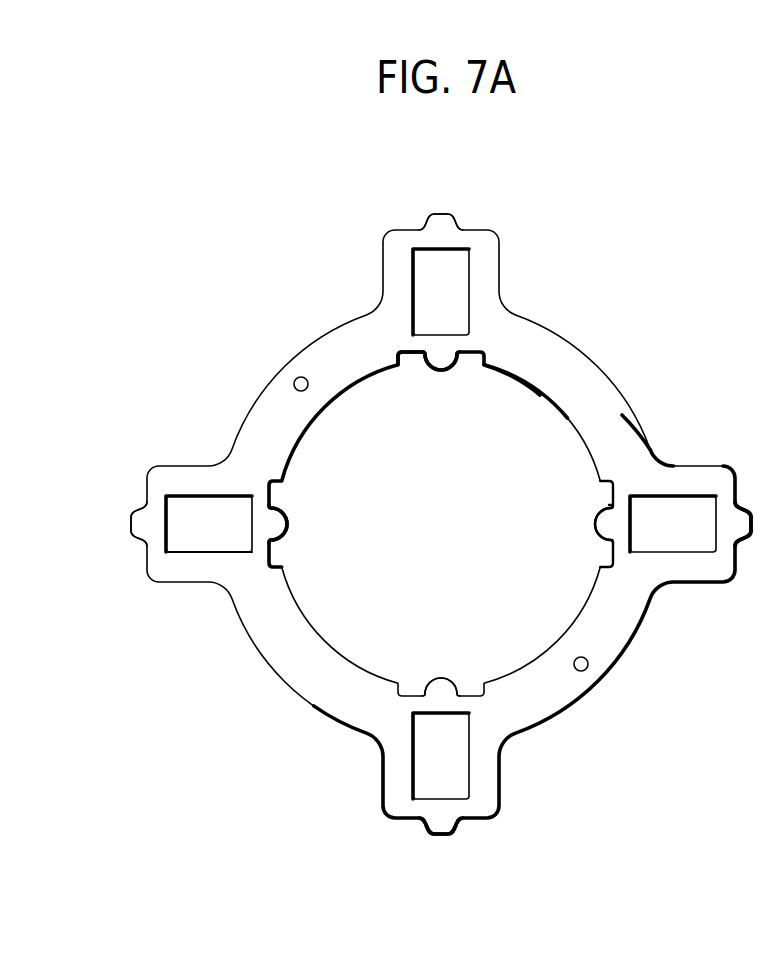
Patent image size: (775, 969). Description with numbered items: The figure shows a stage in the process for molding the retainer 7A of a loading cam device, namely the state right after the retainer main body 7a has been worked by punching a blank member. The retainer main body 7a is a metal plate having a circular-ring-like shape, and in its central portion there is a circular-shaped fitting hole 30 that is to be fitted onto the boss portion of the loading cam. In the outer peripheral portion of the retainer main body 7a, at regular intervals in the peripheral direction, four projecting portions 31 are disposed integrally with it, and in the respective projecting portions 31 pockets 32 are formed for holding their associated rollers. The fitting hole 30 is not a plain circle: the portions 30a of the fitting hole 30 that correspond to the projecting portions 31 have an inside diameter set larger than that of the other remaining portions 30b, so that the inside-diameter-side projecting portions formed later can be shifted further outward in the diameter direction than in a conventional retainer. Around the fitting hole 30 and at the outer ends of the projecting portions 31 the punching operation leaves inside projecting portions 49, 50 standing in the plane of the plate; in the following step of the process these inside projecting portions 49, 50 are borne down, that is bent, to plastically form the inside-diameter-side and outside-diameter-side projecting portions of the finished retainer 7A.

The retainer 7A is at (600, 339).
The retainer main body 7a is at (643, 442).
The fitting hole 30 is at (583, 430).
The portions of the fitting hole corresponding to projecting portions 30a is at (407, 358).
The other remaining portions of the fitting hole 30b is at (531, 387).
The projecting portions 31 is at (383, 273).
The pockets 32 is at (460, 287).
The inside projecting portions 49 is at (470, 360).
The inside projecting portions 50 is at (469, 231).